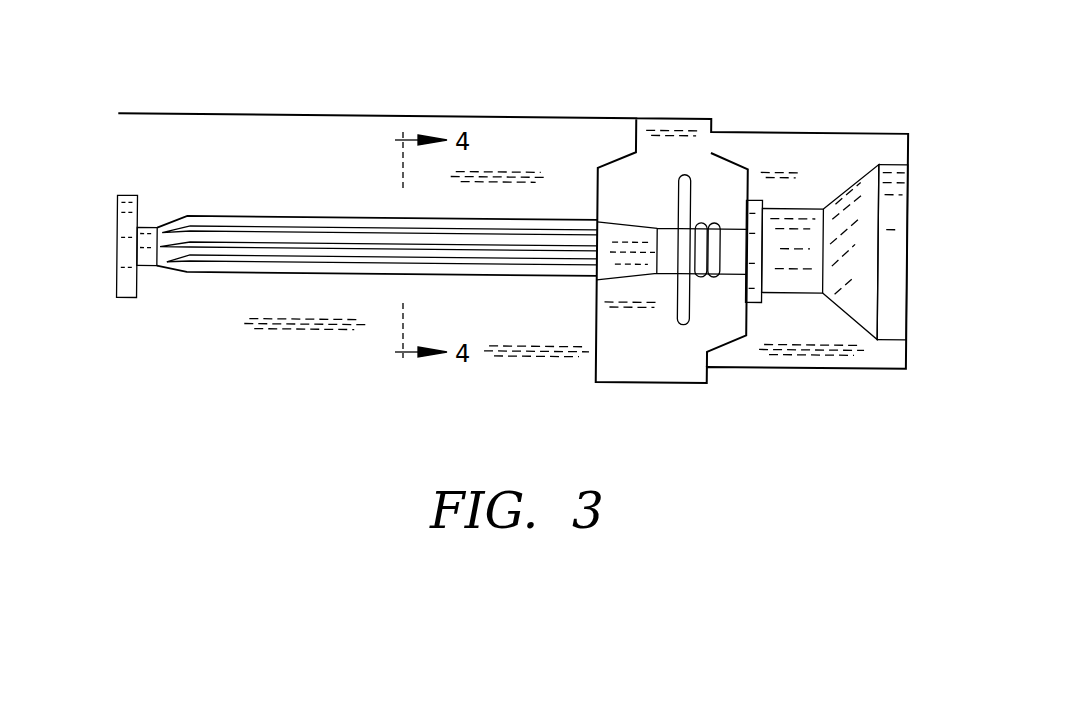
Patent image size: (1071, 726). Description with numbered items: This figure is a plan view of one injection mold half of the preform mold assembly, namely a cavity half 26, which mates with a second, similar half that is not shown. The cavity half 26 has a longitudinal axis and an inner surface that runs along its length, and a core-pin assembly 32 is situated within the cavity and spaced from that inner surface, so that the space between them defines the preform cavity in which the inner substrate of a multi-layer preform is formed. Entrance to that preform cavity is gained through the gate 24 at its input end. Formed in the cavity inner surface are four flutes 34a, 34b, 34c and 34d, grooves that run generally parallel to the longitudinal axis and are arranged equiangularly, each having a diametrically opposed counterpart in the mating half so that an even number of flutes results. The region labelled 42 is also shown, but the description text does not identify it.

The gate 24 is at (147, 247).
The cavity half 26 is at (363, 82).
The core-pin assembly 32 is at (703, 278).
The flute 34a is at (197, 245).
The flute 34b is at (215, 230).
The flute 34c is at (217, 265).
The flute 34d is at (190, 263).
The valve block 42 is at (684, 80).